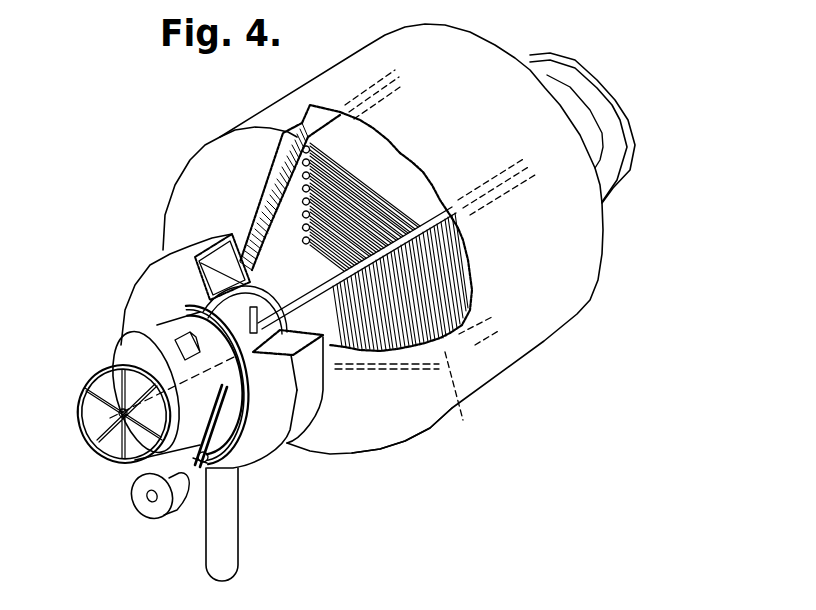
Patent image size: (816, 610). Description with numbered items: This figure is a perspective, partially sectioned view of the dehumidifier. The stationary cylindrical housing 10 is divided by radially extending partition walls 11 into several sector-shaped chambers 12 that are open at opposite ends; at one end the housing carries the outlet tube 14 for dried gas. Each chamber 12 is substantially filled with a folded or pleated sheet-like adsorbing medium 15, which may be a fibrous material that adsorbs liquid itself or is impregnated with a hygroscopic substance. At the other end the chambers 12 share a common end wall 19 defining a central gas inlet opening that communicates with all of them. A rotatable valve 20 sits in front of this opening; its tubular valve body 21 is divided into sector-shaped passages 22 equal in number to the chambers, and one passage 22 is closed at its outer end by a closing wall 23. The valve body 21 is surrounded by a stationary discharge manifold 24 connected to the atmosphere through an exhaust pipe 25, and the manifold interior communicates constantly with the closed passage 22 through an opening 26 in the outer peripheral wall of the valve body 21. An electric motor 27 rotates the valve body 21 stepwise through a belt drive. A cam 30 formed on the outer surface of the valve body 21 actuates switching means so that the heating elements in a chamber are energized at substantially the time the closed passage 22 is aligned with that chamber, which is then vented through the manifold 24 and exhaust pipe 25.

The stationary cylindrical housing 10 is at (577, 317).
The partition walls 11 is at (272, 207).
The sector-shaped chambers 12 is at (304, 176).
The outlet tube 14 is at (623, 107).
The sheet-like adsorbing medium 15 is at (340, 135).
The common end wall 19 is at (369, 435).
The rotatable valve 20 is at (108, 318).
The tubular valve body 21 is at (82, 405).
The sector-shaped passages 22 is at (110, 442).
The closing wall 23 is at (130, 389).
The stationary discharge manifold 24 is at (155, 278).
The exhaust pipe 25 is at (230, 530).
The opening 26 is at (198, 243).
The electric motor 27 is at (157, 511).
The cam 30 is at (170, 327).